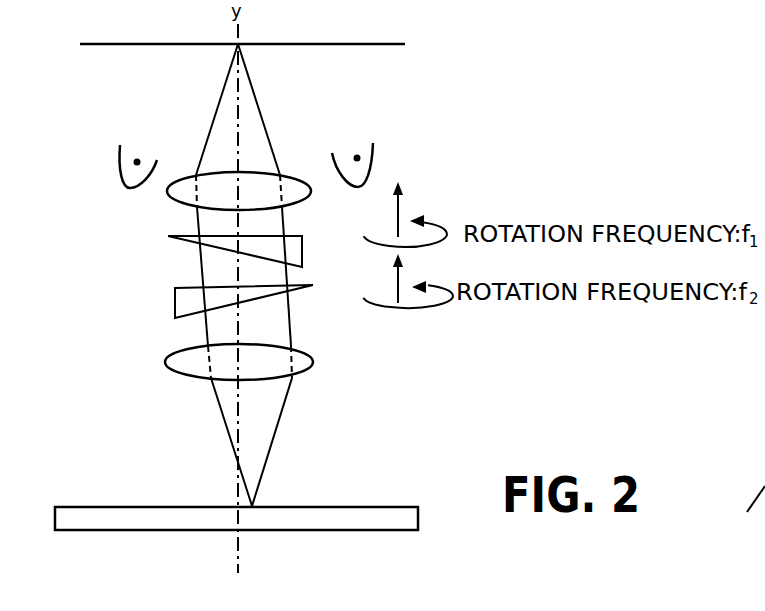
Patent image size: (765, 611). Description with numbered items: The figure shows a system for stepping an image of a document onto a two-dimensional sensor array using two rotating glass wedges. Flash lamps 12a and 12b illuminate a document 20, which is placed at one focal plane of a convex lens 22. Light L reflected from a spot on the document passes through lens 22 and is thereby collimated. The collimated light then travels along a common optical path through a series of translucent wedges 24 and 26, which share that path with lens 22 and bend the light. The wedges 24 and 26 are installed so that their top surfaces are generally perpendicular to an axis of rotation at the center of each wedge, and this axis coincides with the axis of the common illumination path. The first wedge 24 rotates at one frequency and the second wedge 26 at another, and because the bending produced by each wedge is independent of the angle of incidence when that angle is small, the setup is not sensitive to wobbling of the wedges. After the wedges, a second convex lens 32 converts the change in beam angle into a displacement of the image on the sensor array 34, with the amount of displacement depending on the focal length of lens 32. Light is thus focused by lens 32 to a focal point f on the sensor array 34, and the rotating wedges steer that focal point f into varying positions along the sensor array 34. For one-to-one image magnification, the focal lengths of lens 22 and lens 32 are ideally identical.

The document 20 is at (335, 44).
The light beam L is at (250, 98).
The lens 22 is at (292, 172).
The flash lamp 12a is at (120, 180).
The flash lamp 12b is at (374, 178).
The translucent wedge 24 is at (302, 247).
The translucent wedge 26 is at (173, 293).
The convex lens 32 is at (305, 370).
The focal point f is at (258, 501).
The sensor array 34 is at (385, 506).